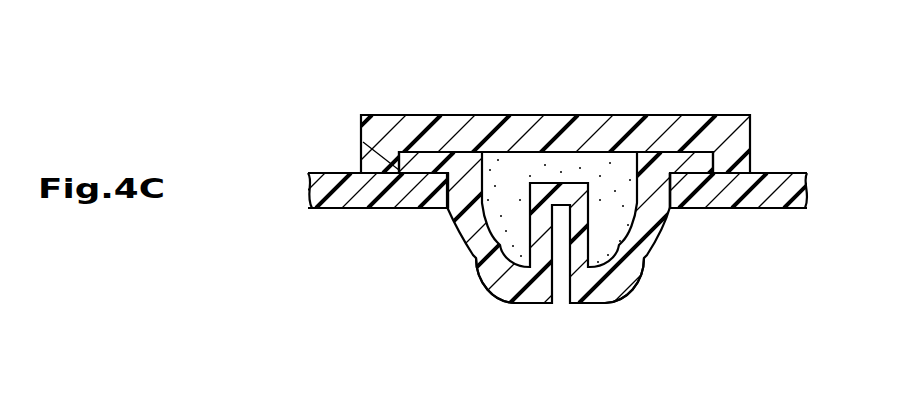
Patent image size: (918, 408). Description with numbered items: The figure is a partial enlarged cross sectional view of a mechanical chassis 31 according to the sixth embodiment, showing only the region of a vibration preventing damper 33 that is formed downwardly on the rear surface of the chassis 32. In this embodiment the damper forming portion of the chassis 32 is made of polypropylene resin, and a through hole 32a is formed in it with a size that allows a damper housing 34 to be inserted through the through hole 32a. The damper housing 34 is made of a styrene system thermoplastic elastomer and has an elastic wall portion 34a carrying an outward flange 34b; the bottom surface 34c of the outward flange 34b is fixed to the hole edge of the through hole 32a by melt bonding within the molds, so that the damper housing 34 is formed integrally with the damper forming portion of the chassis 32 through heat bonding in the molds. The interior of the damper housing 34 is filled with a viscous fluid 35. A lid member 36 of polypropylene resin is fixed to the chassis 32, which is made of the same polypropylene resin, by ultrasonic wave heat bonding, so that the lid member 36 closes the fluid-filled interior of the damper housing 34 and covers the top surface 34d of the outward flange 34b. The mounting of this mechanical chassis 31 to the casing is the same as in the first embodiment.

The mechanical chassis 31 is at (742, 209).
The chassis 32 is at (326, 191).
The through hole 32a is at (643, 198).
The vibration preventing damper 33 is at (412, 94).
The damper housing 34 is at (537, 304).
The elastic wall portion 34a is at (488, 284).
The outward flange 34b is at (381, 200).
The bottom surface of outward flange 34c is at (695, 196).
The top surface of outward flange 34d is at (693, 160).
The viscous fluid 35 is at (563, 165).
The lid member 36 is at (496, 114).